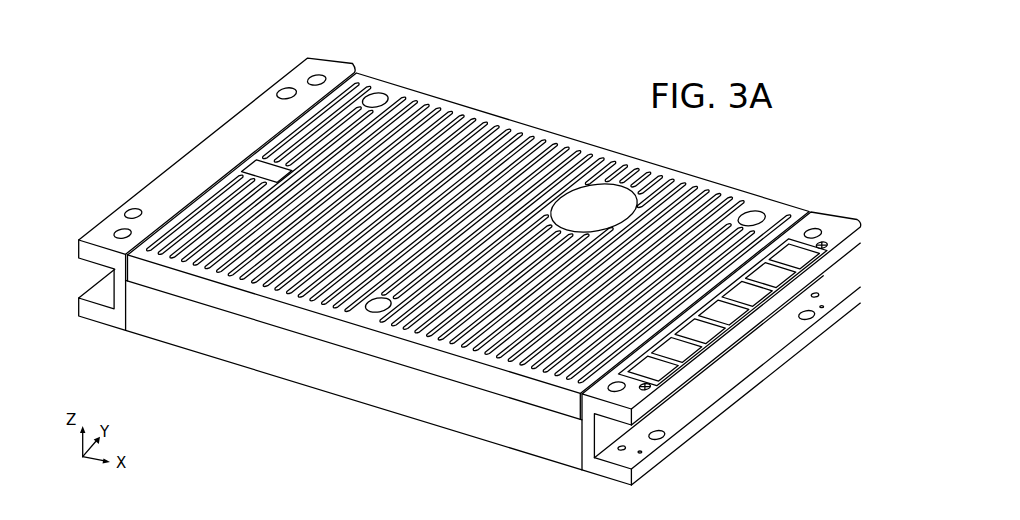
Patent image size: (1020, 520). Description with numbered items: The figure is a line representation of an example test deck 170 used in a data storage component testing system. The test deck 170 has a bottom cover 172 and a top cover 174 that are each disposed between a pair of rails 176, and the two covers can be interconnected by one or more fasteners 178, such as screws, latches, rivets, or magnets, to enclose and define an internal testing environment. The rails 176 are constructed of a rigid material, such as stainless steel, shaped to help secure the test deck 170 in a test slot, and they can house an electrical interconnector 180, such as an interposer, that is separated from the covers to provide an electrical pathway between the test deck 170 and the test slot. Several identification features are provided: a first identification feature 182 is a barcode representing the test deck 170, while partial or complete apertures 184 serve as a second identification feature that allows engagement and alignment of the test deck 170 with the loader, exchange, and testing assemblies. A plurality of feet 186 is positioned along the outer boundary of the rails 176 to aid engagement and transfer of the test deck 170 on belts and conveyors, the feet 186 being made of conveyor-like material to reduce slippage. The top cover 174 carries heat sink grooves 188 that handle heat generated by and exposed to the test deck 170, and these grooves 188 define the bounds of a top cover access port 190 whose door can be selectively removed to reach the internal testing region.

The test deck 170 is at (163, 74).
The bottom cover 172 is at (358, 386).
The top cover 174 is at (441, 92).
The rails 176 is at (148, 187).
The fastener 178 is at (752, 212).
The electrical interconnector 180 is at (828, 242).
The first identification feature 182 is at (252, 165).
The aperture 184 is at (278, 91).
The feet 186 is at (324, 76).
The heat sink grooves 188 is at (512, 131).
The top cover access port 190 is at (609, 218).